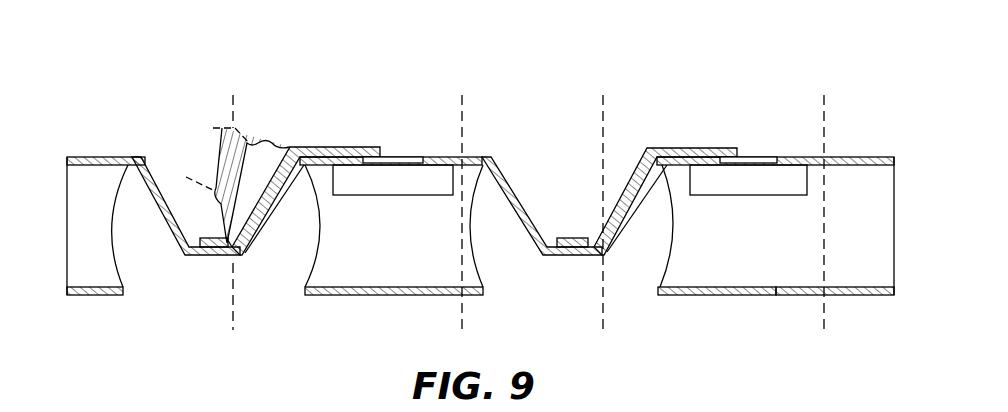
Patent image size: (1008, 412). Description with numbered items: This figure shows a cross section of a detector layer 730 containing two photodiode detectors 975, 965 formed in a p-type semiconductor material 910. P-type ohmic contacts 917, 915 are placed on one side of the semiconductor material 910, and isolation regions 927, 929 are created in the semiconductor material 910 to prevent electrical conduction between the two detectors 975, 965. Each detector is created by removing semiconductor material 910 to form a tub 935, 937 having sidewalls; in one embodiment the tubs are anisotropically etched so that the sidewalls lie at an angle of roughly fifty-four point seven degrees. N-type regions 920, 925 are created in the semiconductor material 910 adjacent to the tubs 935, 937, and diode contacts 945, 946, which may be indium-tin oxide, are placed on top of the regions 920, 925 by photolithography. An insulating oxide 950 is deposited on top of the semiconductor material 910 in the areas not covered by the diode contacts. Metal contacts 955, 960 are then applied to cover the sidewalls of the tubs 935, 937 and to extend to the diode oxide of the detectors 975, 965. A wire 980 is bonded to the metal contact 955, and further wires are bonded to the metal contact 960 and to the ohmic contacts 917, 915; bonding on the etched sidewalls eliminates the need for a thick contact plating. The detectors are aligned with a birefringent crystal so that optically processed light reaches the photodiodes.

The microelectronic structure 730 is at (798, 86).
The p-type semiconductor material 910 is at (883, 271).
The p-type ohmic contact 915 is at (868, 298).
The p-type ohmic contact 917 is at (424, 297).
The n-type region 920 is at (419, 189).
The n-type region 925 is at (771, 191).
The isolation region 927 is at (294, 277).
The isolation region 929 is at (658, 267).
The tub 935 is at (215, 94).
The tub 937 is at (568, 194).
The diode contact 945 is at (404, 154).
The diode contact 946 is at (763, 154).
The insulating oxide 950 is at (113, 153).
The metal contact 955 is at (310, 146).
The metal contact 960 is at (633, 155).
The photodiode detector 965 is at (733, 321).
The photodiode detector 975 is at (366, 322).
The wire 980 is at (268, 139).